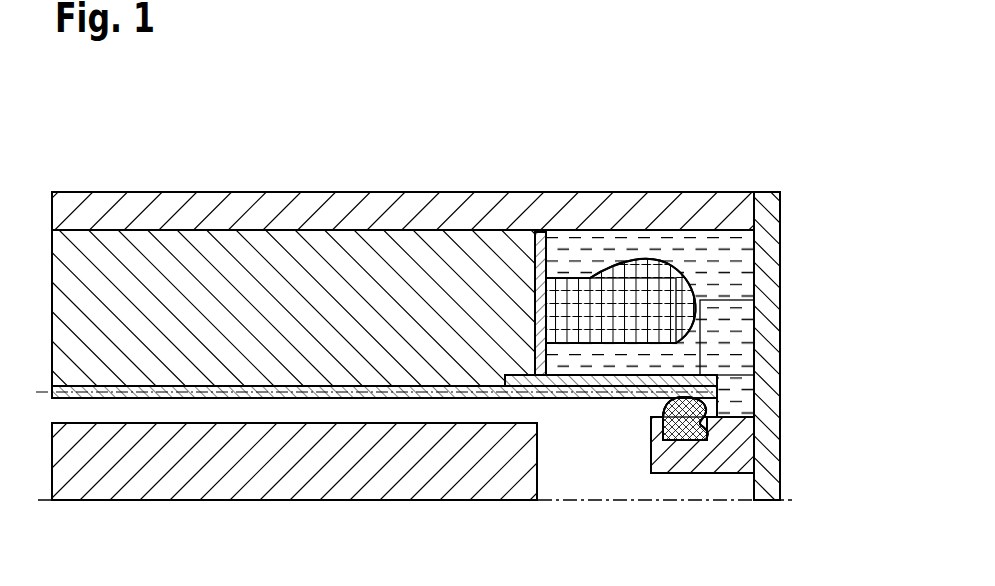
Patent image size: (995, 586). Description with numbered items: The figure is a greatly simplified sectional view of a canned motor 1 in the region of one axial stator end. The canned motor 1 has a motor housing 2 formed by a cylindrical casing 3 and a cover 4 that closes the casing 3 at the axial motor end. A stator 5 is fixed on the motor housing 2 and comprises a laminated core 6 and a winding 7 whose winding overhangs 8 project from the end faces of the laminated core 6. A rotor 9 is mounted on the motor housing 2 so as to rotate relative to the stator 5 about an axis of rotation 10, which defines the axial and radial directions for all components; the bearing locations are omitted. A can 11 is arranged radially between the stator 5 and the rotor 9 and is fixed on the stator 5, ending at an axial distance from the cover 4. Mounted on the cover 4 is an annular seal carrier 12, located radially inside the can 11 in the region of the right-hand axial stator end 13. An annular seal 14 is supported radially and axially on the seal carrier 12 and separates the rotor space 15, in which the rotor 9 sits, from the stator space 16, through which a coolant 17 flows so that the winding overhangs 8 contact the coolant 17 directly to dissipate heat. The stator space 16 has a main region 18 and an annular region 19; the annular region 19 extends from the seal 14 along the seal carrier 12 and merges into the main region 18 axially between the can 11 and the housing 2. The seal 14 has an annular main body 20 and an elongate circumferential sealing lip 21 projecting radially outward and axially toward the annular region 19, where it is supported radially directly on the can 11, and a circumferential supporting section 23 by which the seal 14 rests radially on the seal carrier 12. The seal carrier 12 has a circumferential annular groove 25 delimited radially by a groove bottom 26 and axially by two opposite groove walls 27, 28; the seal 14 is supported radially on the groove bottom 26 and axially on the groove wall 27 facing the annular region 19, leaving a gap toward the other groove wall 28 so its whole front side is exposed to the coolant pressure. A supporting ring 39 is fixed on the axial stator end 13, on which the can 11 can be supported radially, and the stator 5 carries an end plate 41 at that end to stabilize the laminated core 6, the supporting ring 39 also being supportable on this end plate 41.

The canned motor 1 is at (416, 278).
The motor housing 2 is at (403, 174).
The cylindrical casing 3 is at (403, 174).
The cover 4 is at (799, 346).
The stator 5 is at (293, 178).
The laminated core 6 is at (293, 252).
The winding 7 is at (621, 231).
The winding overhangs 8 is at (611, 231).
The rotor 9 is at (294, 496).
The axis of rotation 10 is at (415, 535).
The can 11 is at (384, 484).
The seal carrier 12 is at (754, 464).
The axial stator end 13 is at (499, 247).
The seal 14 is at (624, 487).
The rotor space 15 is at (351, 493).
The stator space 16 is at (650, 268).
The coolant 17 is at (779, 327).
The main region 18 is at (702, 323).
The annular region 19 is at (760, 418).
The main body 20 is at (699, 493).
The sealing lip 21 is at (447, 378).
The supporting section 23 is at (738, 493).
The annular groove 25 is at (685, 505).
The groove bottom 26 is at (760, 367).
The groove wall 27 is at (645, 494).
The groove wall 28 is at (760, 445).
The supporting ring 39 is at (611, 252).
The end plate 41 is at (538, 247).